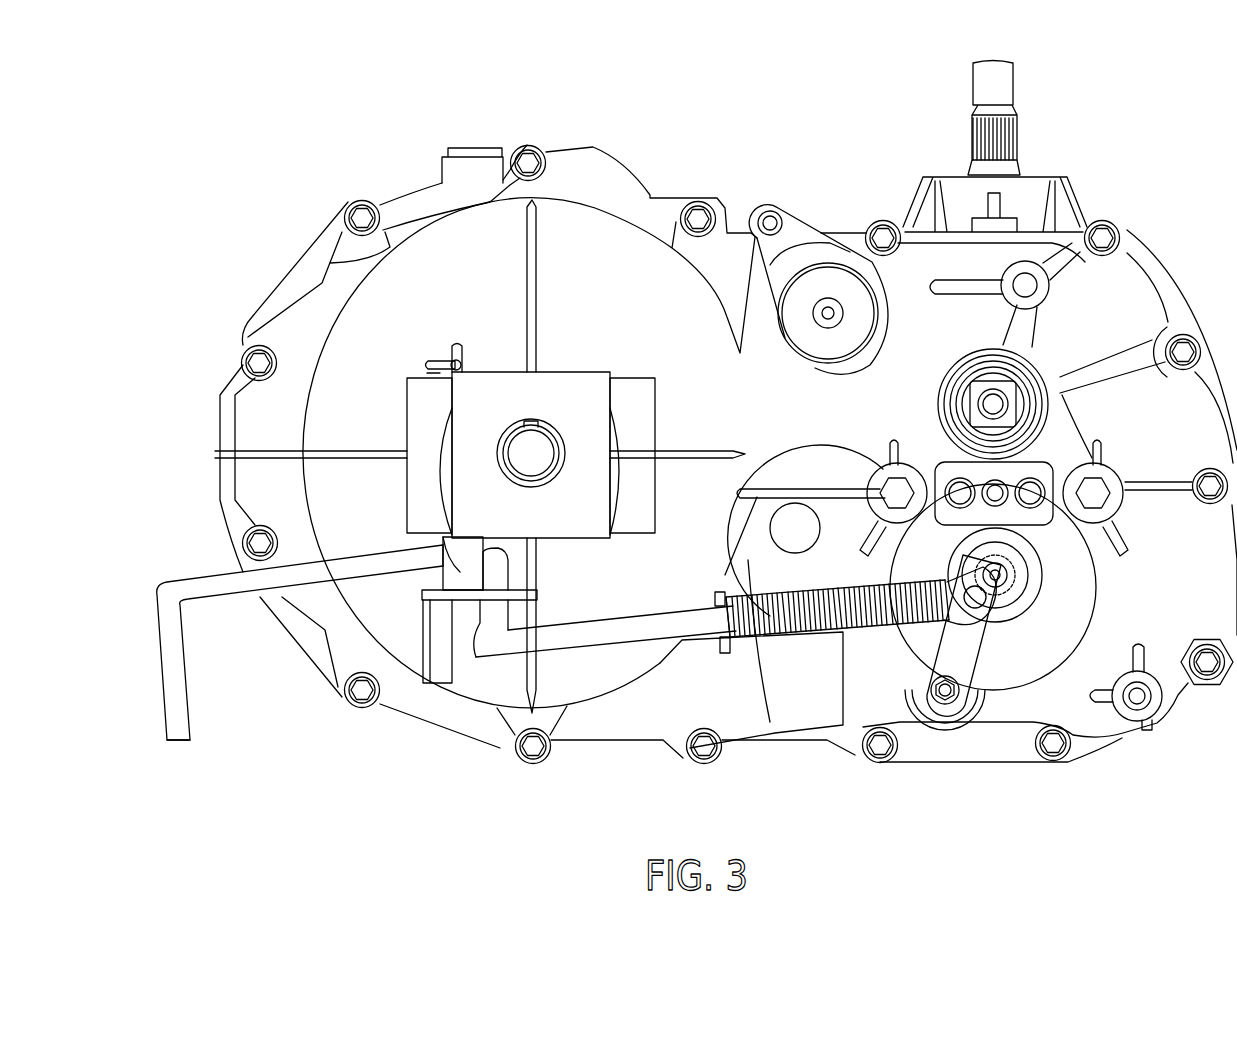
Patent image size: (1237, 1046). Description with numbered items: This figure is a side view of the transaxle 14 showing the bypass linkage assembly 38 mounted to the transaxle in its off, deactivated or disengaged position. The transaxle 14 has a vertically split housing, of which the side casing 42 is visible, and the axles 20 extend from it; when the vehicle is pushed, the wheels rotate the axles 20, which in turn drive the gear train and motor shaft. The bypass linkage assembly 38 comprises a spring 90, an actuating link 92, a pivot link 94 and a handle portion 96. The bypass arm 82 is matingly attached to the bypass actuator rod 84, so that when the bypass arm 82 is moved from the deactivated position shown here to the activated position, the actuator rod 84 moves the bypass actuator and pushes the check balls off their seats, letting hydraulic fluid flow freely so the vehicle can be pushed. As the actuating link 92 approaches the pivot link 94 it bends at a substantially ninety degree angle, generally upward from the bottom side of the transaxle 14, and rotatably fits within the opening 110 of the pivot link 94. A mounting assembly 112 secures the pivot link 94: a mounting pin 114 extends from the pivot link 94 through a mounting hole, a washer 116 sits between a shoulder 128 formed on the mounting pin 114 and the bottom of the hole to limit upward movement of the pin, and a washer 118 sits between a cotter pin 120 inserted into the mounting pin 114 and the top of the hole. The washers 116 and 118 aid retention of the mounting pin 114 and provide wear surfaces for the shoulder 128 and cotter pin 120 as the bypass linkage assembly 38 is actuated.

The transaxle 14 is at (230, 145).
The axles 20 is at (532, 456).
The bypass linkage assembly 38 is at (718, 663).
The side casing 42 is at (1189, 588).
The bypass arm 82 is at (975, 653).
The bypass actuator rod 84 is at (953, 705).
The spring 90 is at (735, 598).
The actuating link 92 is at (565, 640).
The pivot link 94 is at (425, 600).
The handle portion 96 is at (192, 703).
The opening 110 is at (488, 603).
The mounting assembly 112 is at (385, 543).
The mounting pin 114 is at (465, 560).
The washer 116 is at (440, 547).
The washer 118 is at (428, 364).
The cotter pin 120 is at (450, 354).
The shoulder 128 is at (443, 537).